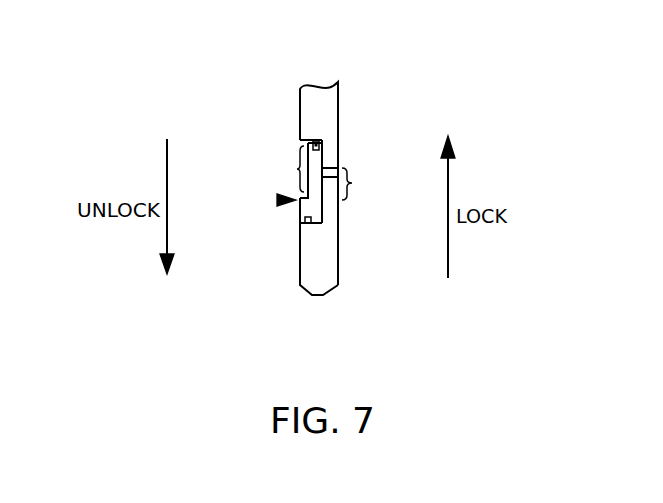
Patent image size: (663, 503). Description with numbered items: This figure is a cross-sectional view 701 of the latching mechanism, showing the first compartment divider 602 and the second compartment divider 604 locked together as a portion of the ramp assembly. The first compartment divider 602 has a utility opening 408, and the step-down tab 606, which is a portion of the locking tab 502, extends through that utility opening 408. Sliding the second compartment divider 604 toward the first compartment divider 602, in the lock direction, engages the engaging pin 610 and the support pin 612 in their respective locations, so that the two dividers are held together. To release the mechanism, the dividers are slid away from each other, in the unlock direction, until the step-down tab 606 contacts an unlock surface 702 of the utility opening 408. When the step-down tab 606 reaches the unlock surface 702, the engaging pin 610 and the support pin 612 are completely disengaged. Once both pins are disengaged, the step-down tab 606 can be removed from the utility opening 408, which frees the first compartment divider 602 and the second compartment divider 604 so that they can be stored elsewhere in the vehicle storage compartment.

The cross-sectional view 701 is at (187, 47).
The locking tab 502 is at (330, 207).
The first compartment divider 602 is at (327, 110).
The second compartment divider 604 is at (327, 260).
The step-down tab 606 is at (296, 170).
The support pin 612 is at (318, 141).
The engaging pin 610 is at (307, 226).
The utility opening 408 is at (353, 183).
The unlock surface 702 is at (277, 200).